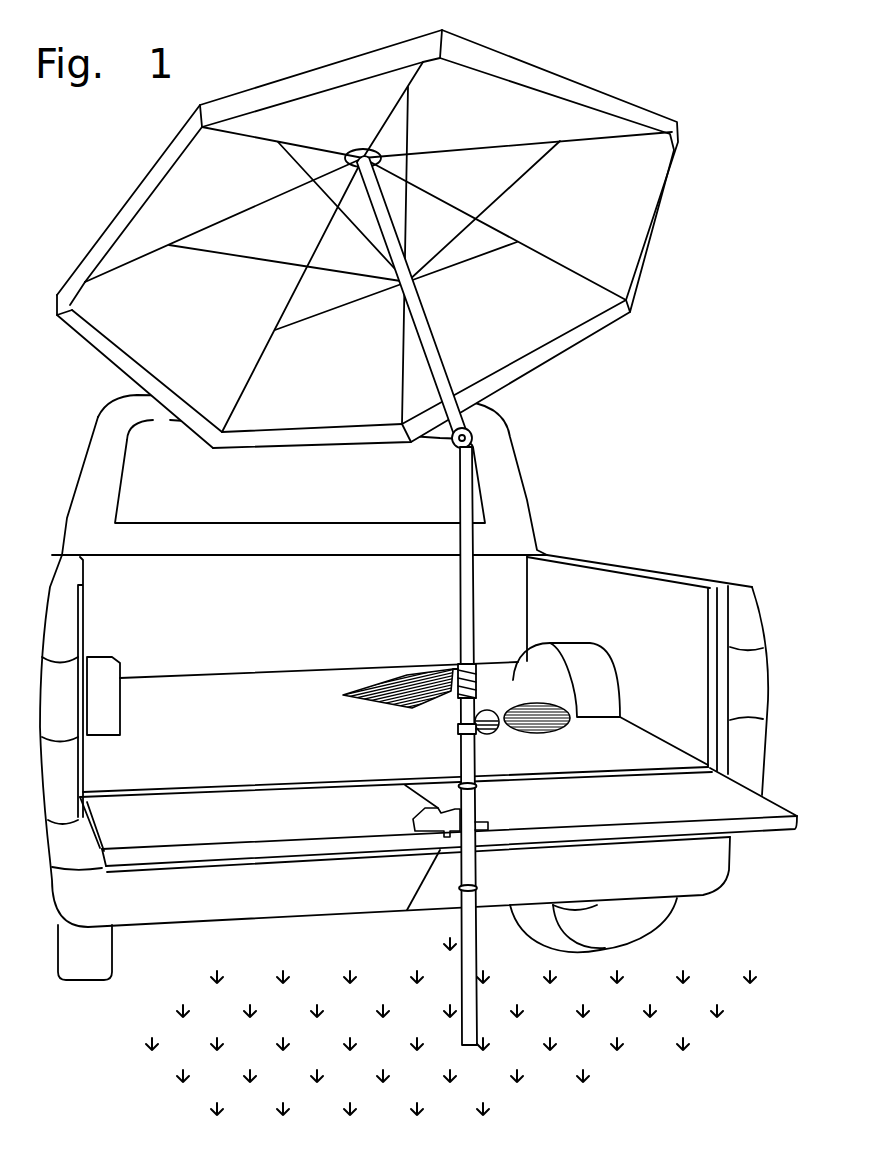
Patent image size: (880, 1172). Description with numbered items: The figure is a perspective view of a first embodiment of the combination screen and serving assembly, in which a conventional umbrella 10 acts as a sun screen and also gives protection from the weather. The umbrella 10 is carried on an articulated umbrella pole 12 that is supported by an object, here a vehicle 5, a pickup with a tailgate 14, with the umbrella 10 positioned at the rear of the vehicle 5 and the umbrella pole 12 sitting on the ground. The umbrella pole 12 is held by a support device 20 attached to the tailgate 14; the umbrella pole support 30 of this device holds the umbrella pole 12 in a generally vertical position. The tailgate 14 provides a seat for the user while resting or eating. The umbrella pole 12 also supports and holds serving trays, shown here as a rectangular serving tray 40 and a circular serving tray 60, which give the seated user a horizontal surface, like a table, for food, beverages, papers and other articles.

The vehicle 5 is at (598, 537).
The umbrella 10 is at (593, 205).
The umbrella pole 12 is at (465, 483).
The tailgate 14 is at (203, 833).
The support device 20 is at (396, 818).
The umbrella pole support 30 is at (494, 892).
The rectangular serving tray 40 is at (350, 703).
The circular serving tray 60 is at (571, 744).